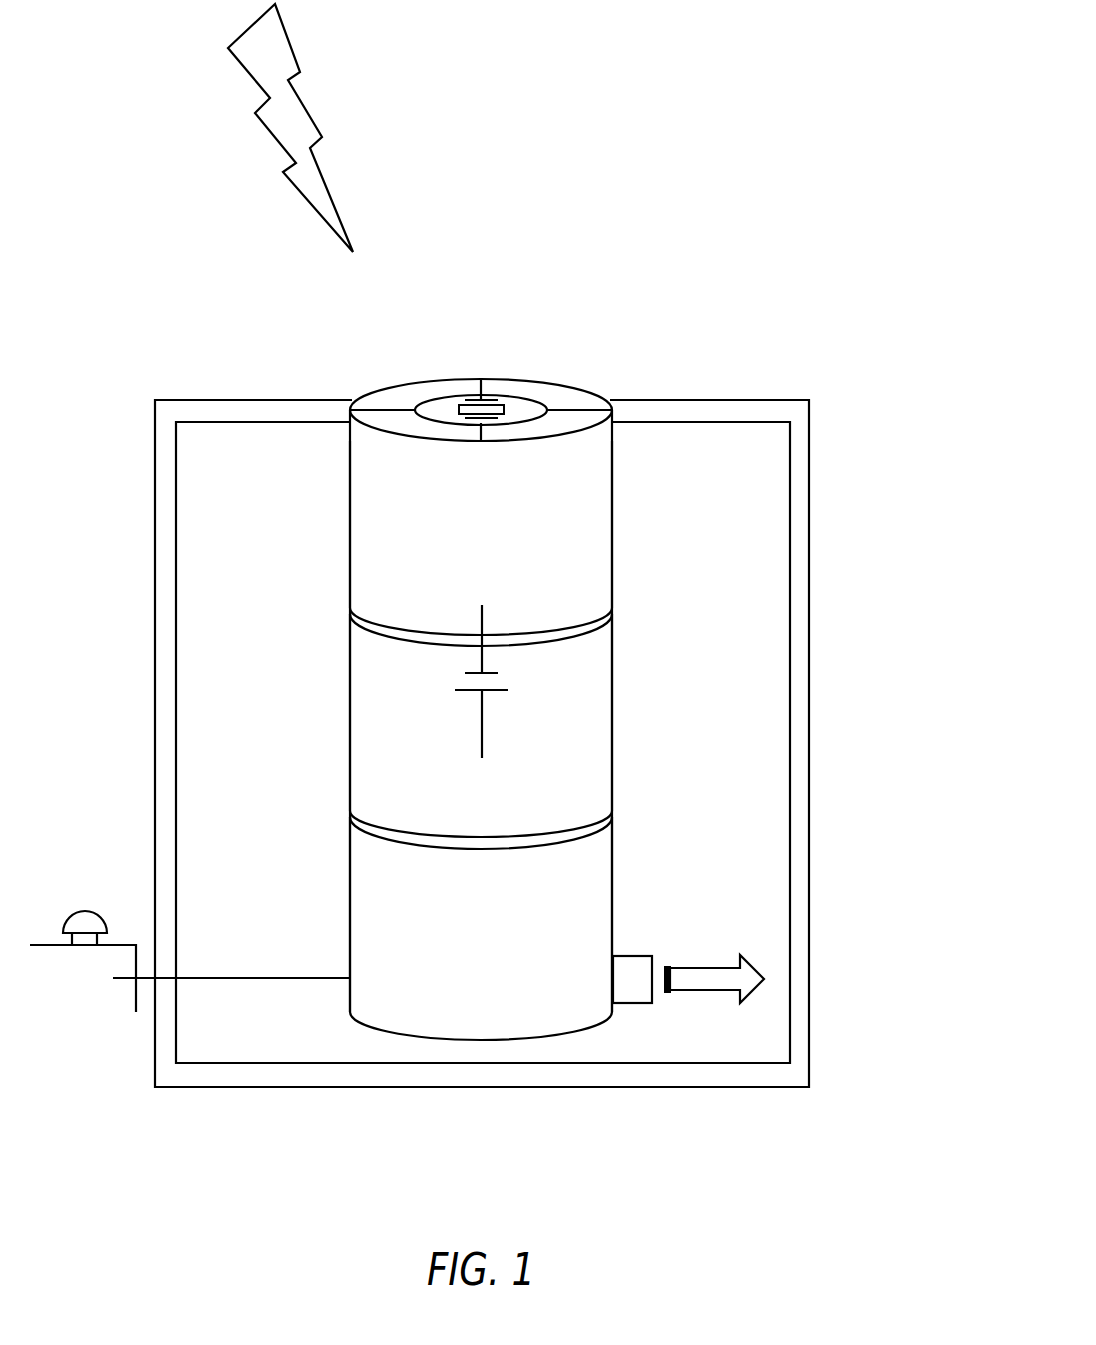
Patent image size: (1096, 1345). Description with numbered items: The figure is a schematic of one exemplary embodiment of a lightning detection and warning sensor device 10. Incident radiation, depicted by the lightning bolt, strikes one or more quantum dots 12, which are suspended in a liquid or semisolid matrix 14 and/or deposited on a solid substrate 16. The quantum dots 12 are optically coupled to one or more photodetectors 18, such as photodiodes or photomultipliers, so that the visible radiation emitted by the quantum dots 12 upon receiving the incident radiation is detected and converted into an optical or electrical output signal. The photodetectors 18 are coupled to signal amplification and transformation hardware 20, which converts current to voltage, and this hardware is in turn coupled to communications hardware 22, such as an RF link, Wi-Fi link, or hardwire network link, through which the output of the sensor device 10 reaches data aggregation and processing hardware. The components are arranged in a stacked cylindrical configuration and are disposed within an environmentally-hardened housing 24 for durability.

The sensor device 10 is at (825, 270).
The quantum dots 12 is at (482, 395).
The liquid or semisolid matrix 14 is at (525, 397).
The solid substrate 16 is at (573, 408).
The photodetectors 18 is at (647, 520).
The signal amplification and transformation hardware 20 is at (646, 704).
The communications hardware 22 is at (646, 897).
The housing 24 is at (820, 1002).